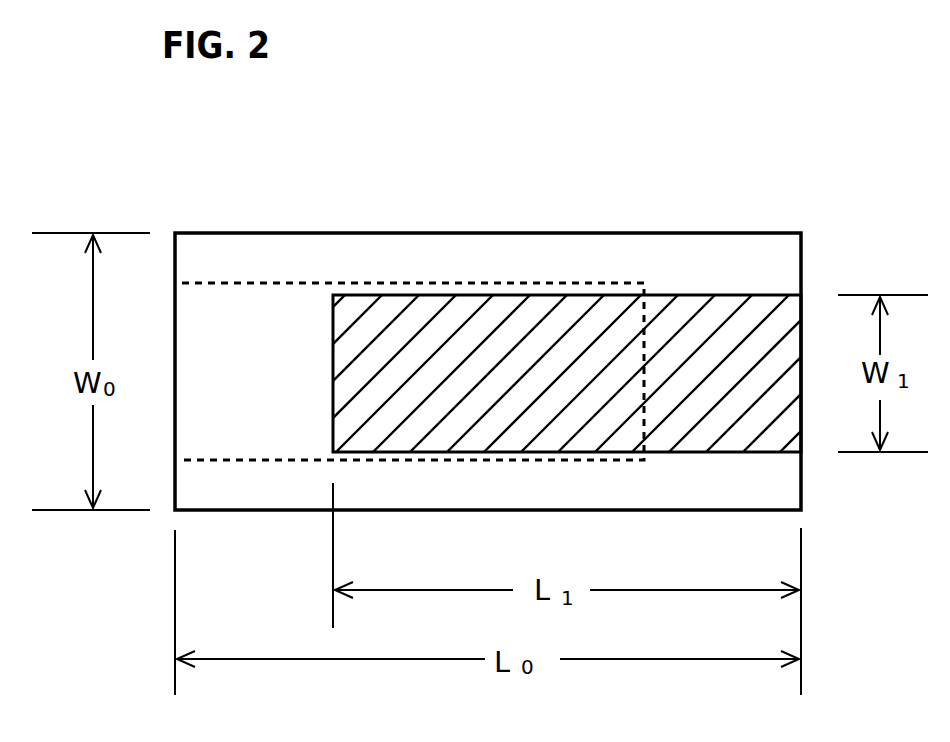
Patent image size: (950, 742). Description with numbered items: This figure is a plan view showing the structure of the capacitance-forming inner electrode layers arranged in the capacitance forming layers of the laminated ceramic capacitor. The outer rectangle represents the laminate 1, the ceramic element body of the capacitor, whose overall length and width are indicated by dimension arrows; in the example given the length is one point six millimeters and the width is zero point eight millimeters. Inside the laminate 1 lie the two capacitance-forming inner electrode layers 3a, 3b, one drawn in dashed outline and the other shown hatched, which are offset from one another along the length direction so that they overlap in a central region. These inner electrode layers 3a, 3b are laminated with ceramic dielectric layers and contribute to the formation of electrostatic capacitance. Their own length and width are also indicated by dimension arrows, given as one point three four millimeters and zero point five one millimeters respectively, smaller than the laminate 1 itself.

The laminate 1 is at (585, 233).
The capacitance-forming inner electrode layer 3a is at (275, 283).
The capacitance-forming inner electrode layer 3b is at (428, 295).